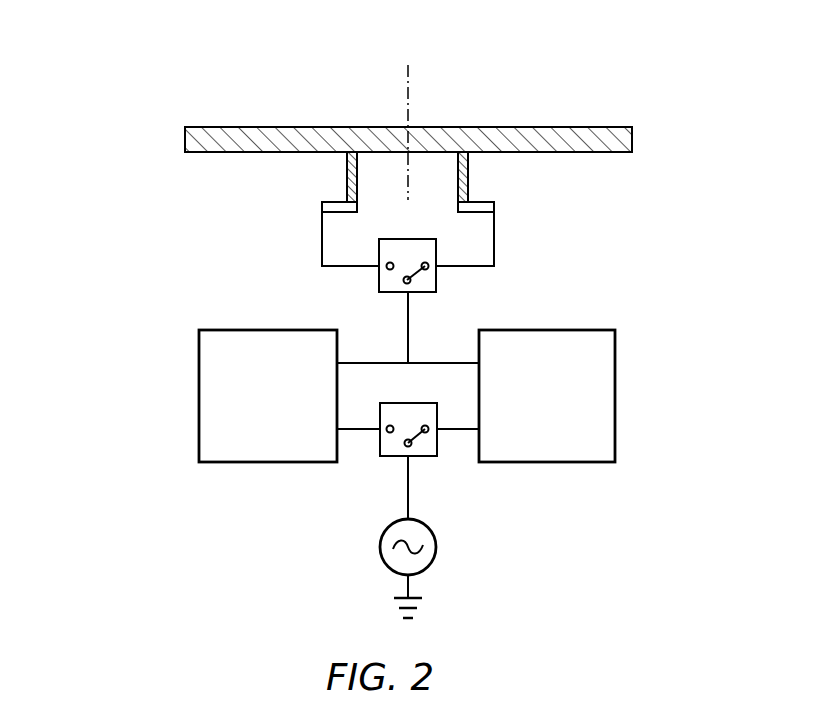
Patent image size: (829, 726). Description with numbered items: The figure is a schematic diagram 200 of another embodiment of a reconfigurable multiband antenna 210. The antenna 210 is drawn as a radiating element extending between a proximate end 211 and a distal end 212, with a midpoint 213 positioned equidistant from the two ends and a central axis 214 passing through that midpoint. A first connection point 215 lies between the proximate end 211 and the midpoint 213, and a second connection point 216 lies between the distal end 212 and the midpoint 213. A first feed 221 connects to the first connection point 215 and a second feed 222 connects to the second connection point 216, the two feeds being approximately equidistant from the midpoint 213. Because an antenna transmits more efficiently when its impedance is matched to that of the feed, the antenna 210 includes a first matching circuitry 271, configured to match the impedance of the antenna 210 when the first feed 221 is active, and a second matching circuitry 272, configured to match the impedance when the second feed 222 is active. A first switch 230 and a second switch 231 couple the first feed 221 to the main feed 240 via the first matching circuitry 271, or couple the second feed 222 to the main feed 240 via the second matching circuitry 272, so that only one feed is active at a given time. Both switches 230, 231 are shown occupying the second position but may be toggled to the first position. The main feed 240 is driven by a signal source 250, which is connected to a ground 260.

The schematic diagram 200 is at (126, 44).
The reconfigurable multiband antenna 210 is at (598, 72).
The proximate end 211 is at (185, 136).
The distal end 212 is at (632, 136).
The midpoint 213 is at (408, 153).
The central axis 214 is at (408, 80).
The first connection point 215 is at (343, 126).
The second connection point 216 is at (472, 126).
The first feed 221 is at (347, 176).
The second feed 222 is at (468, 176).
The first switch 230 is at (436, 278).
The second switch 231 is at (432, 456).
The main feed 240 is at (408, 486).
The signal source 250 is at (428, 527).
The ground 260 is at (406, 620).
The first matching circuitry 271 is at (199, 392).
The second matching circuitry 272 is at (615, 392).